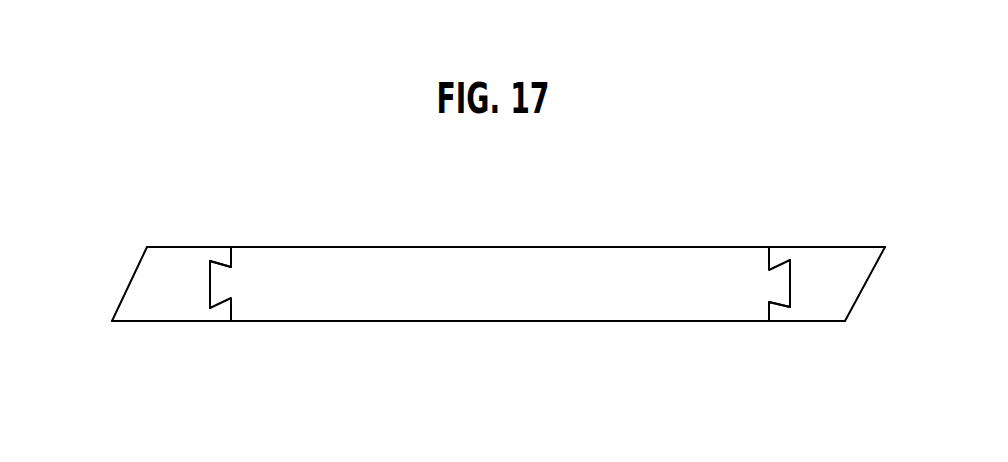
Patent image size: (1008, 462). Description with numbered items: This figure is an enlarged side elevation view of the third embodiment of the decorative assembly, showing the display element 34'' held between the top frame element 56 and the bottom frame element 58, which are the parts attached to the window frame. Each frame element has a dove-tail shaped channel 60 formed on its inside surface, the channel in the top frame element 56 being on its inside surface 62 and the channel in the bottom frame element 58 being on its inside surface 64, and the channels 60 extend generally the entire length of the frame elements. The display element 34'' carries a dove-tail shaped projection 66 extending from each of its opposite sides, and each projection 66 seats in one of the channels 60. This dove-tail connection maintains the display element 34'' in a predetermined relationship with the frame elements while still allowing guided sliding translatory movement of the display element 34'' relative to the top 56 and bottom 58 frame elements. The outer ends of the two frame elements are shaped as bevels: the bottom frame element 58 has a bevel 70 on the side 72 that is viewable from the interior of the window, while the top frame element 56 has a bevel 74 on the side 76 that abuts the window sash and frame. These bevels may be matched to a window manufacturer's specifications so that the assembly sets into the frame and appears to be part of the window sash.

The display element 34'' is at (487, 276).
The top frame element 56 is at (828, 313).
The bottom frame element 58 is at (164, 310).
The dove-tail shaped channel 60 is at (228, 286).
The inside surface 62 is at (762, 313).
The inside surface 64 is at (231, 258).
The dove-tail shaped projection 66 is at (204, 272).
The bevel 70 is at (124, 272).
The side viewable from the interior of the window 72 is at (514, 193).
The bevel 74 is at (870, 290).
The side abutting the window sash and frame 76 is at (514, 380).